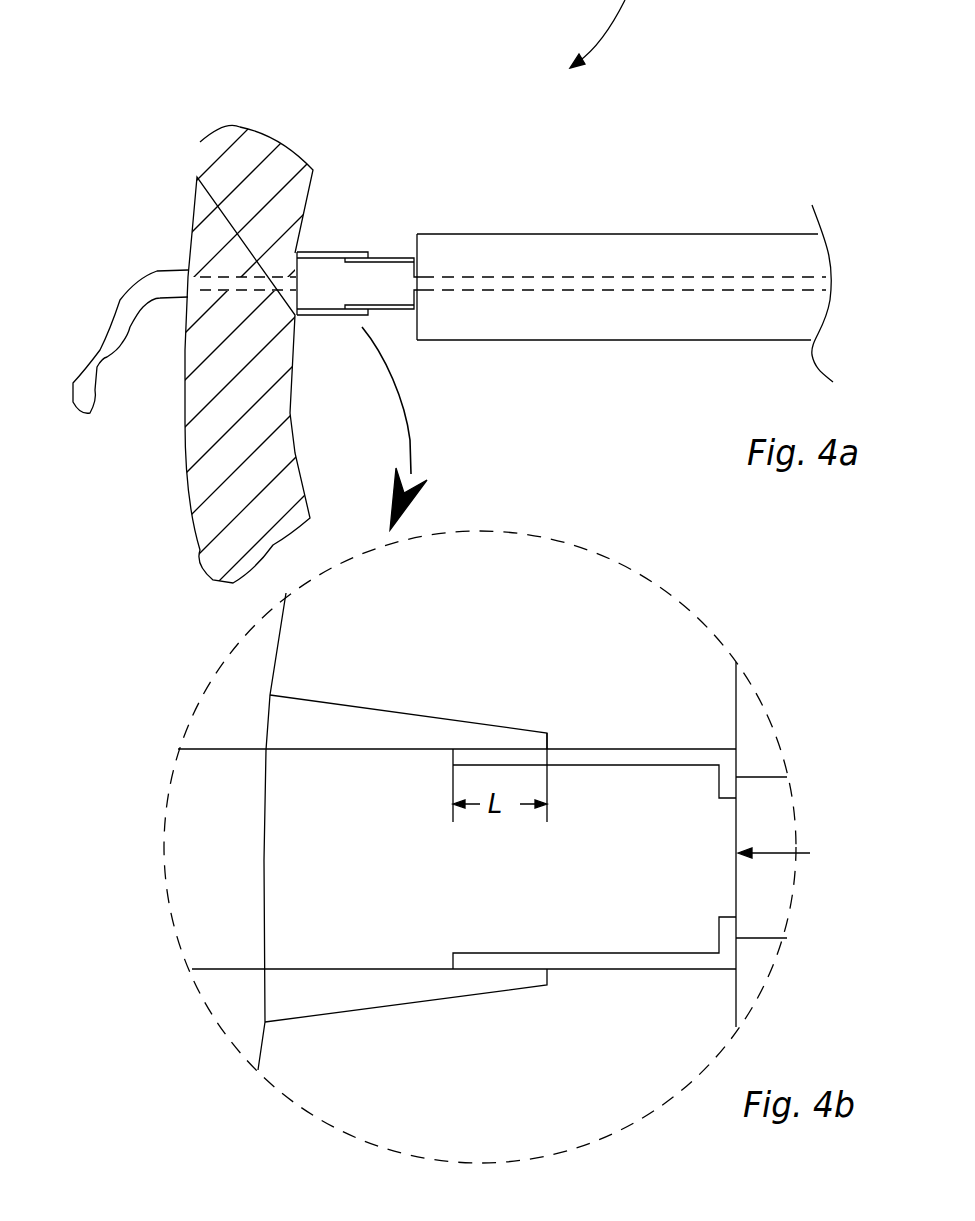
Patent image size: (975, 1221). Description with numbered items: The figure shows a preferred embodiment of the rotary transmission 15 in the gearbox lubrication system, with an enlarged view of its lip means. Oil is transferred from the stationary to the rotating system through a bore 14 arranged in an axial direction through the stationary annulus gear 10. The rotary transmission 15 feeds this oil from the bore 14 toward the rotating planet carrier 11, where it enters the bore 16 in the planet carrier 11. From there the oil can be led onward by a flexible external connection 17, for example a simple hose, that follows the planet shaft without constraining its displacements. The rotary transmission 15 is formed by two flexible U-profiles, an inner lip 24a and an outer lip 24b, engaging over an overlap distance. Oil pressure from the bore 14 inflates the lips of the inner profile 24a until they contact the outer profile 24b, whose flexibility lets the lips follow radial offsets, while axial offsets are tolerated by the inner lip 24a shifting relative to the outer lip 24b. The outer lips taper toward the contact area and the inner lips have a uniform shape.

In FIG. 4A, the annulus gear 10 is at (671, 328).
In FIG. 4A, the planet carrier 11 is at (250, 193).
In FIG. 4A, the bore in the annulus gear 14 is at (500, 282).
In FIG. 4A, the rotary transmission 15 is at (320, 252).
In FIG. 4B, the rotary transmission 15 is at (462, 645).
In FIG. 4A, the bore in the planet carrier 16 is at (210, 277).
In FIG. 4A, the flexible external connection 17 is at (110, 335).
In FIG. 4B, the inner lip 24a is at (648, 748).
In FIG. 4B, the outer lip 24b is at (367, 727).